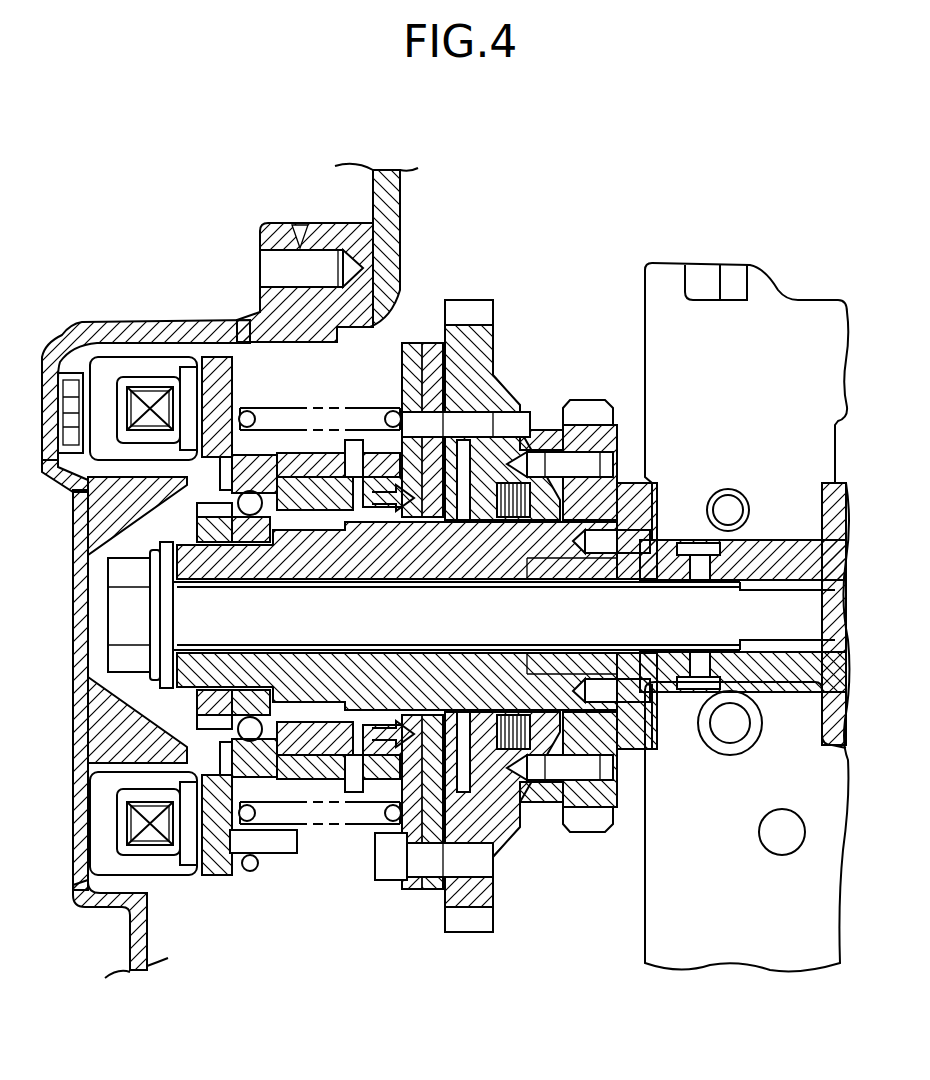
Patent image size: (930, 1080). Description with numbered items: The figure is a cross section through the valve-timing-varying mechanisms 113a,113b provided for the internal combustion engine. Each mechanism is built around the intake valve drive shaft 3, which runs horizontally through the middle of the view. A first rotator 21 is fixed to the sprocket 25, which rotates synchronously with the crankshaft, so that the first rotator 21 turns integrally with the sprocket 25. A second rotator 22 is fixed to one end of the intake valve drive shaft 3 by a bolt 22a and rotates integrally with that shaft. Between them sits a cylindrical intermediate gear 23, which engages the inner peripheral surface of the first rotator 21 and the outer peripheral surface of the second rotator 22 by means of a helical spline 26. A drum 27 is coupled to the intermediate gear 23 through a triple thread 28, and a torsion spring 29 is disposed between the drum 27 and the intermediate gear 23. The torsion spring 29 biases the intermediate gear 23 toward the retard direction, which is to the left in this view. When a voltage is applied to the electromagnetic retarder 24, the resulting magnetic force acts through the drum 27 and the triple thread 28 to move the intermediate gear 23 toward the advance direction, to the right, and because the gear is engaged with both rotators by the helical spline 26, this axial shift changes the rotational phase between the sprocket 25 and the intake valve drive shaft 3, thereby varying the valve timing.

The intake valve drive shaft 3 is at (656, 540).
The first rotator 21 is at (408, 345).
The second rotator 22 is at (583, 525).
The bolt 22a is at (130, 660).
The intermediate gear 23 is at (344, 480).
The electromagnetic retarder 24 is at (147, 400).
The sprocket 25 is at (583, 400).
The helical spline 26 is at (402, 525).
The drum 27 is at (198, 395).
The triple thread 28 is at (290, 470).
The torsion spring 29 is at (270, 405).
The valve-timing-varying mechanisms 113a,113b is at (336, 905).